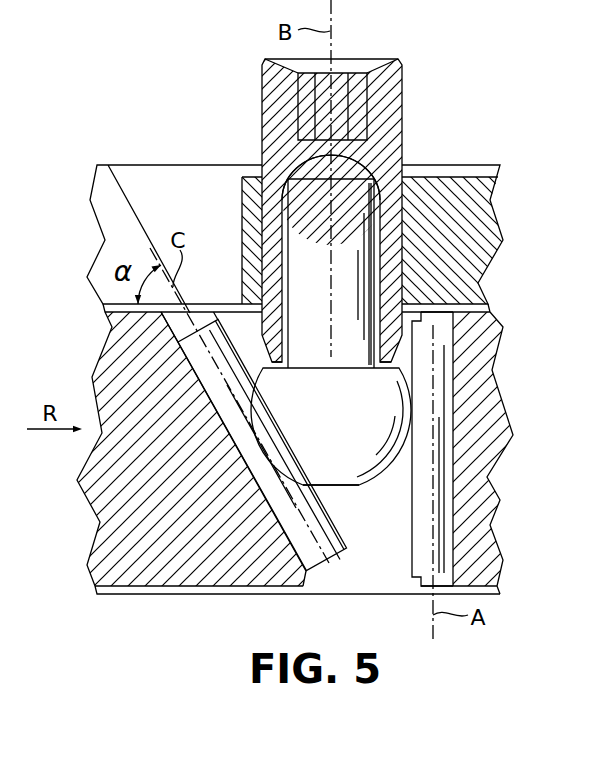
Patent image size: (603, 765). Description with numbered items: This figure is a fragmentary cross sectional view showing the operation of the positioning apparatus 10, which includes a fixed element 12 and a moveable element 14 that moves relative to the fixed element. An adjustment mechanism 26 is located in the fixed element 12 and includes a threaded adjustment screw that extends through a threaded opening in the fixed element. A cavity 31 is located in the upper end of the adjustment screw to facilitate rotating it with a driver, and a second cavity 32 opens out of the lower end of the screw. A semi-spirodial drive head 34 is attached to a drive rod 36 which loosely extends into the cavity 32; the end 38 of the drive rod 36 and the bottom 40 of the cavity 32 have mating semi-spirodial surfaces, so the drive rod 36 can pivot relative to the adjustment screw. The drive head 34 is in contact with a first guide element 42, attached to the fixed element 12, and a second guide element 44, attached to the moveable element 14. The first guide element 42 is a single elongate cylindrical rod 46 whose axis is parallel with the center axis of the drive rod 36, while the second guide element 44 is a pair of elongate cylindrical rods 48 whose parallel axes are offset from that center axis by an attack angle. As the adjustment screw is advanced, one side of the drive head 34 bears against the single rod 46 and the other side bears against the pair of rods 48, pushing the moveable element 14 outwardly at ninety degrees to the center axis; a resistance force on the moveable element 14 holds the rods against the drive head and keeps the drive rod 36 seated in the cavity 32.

The positioning apparatus 10 is at (478, 148).
The fixed element 12 is at (507, 460).
The moveable element 14 is at (83, 462).
The adjustment mechanism 26 is at (405, 82).
The cavity 31 is at (355, 82).
The cavity 32 is at (282, 286).
The semi-spirodial drive head 34 is at (345, 437).
The drive rod 36 is at (283, 345).
The end of the drive rod 38 is at (350, 178).
The bottom of the cavity 40 is at (317, 158).
The first guide element 42 is at (405, 560).
The second guide element 44 is at (349, 562).
The single elongate cylindrical rod 46 is at (412, 512).
The pair of elongate cylindrical rods 48 is at (328, 500).